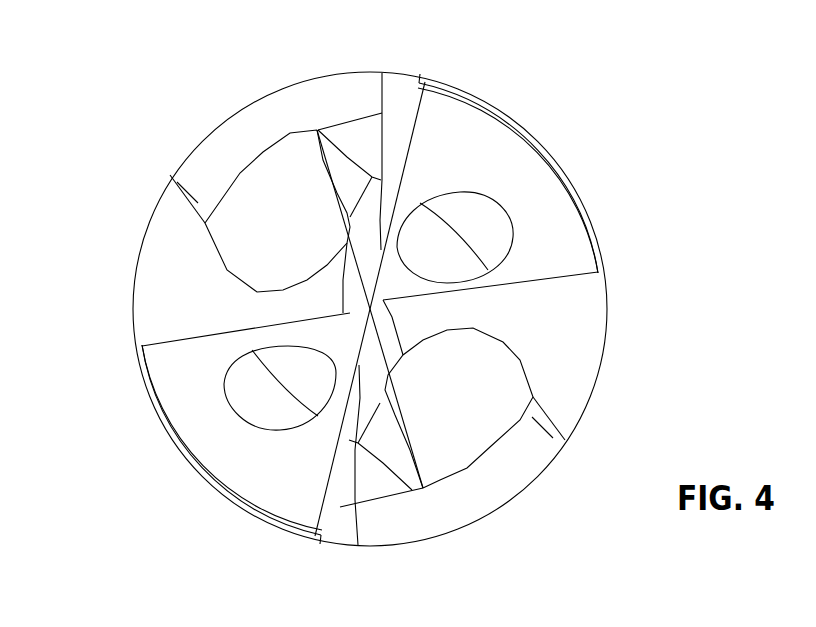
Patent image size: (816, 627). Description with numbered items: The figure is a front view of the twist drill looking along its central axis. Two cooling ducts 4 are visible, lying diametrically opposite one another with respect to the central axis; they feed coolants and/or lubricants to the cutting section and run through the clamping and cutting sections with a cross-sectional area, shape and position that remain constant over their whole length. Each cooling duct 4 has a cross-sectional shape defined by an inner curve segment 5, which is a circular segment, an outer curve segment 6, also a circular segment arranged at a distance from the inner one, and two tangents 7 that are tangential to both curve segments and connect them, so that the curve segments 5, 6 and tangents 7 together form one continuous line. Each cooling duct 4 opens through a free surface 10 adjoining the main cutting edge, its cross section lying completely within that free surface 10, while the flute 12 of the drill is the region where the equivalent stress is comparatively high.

The cooling duct 4 is at (433, 235).
The inner curve segment 5 is at (285, 355).
The outer curve segment 6 is at (495, 205).
The tangent 7 is at (415, 222).
The free surface 10 is at (433, 140).
The flute 12 is at (250, 200).